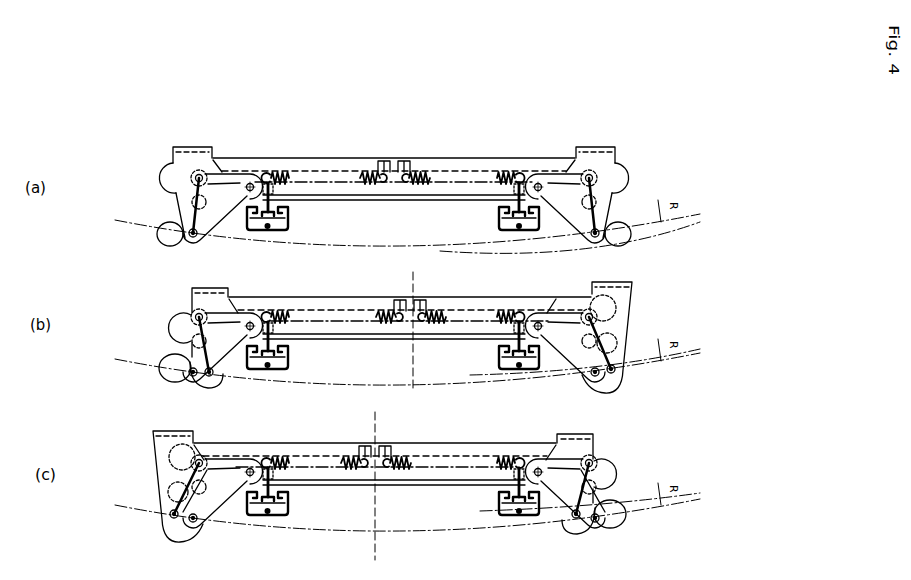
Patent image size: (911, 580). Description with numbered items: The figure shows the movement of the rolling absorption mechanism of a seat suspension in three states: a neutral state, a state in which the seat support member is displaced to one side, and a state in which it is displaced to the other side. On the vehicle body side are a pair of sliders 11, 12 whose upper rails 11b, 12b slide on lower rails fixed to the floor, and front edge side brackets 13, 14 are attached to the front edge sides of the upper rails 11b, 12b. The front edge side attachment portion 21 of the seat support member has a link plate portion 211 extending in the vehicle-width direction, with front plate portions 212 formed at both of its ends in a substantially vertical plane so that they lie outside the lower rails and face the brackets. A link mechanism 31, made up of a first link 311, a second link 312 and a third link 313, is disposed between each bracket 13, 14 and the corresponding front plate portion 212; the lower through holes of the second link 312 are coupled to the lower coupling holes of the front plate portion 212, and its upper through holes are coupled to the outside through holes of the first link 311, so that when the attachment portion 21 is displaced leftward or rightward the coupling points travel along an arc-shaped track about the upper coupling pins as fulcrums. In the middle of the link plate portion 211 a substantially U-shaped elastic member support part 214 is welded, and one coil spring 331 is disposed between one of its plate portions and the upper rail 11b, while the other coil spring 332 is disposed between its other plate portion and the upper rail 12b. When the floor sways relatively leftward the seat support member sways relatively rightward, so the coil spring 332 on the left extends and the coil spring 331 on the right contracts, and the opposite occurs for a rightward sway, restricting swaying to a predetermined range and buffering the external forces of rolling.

The slider 11 is at (498, 226).
The upper rail 11b is at (512, 192).
The slider 12 is at (289, 224).
The upper rail 12b is at (270, 191).
The front edge side bracket 13 is at (556, 216).
The front edge side bracket 14 is at (222, 218).
The front edge side attachment portion 21 is at (354, 152).
The link plate portion 211 is at (472, 158).
The front plate portion 212 is at (182, 206).
The elastic member support part 214 is at (401, 161).
The link mechanism 31 is at (156, 181).
The first link 311 is at (218, 170).
The second link 312 is at (171, 170).
The third link 313 is at (172, 243).
The coil spring 331 is at (504, 170).
The coil spring 332 is at (288, 170).